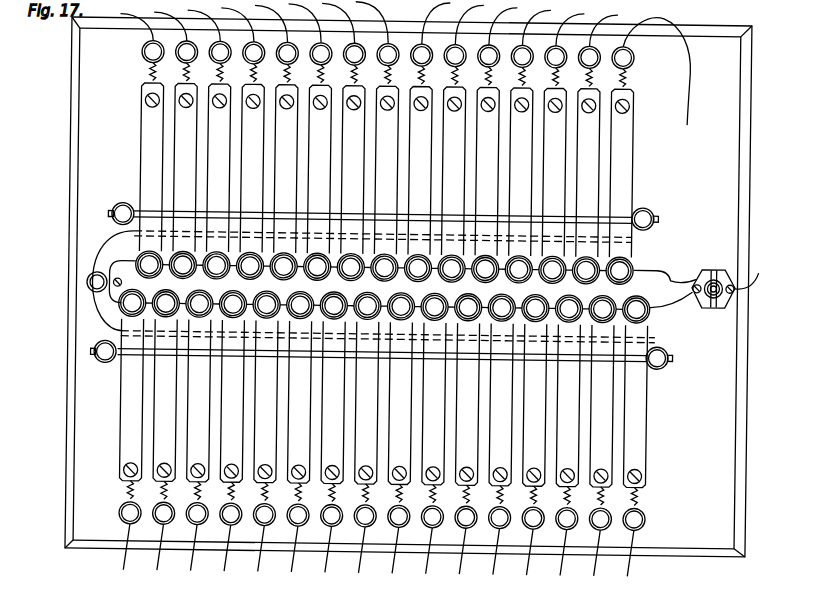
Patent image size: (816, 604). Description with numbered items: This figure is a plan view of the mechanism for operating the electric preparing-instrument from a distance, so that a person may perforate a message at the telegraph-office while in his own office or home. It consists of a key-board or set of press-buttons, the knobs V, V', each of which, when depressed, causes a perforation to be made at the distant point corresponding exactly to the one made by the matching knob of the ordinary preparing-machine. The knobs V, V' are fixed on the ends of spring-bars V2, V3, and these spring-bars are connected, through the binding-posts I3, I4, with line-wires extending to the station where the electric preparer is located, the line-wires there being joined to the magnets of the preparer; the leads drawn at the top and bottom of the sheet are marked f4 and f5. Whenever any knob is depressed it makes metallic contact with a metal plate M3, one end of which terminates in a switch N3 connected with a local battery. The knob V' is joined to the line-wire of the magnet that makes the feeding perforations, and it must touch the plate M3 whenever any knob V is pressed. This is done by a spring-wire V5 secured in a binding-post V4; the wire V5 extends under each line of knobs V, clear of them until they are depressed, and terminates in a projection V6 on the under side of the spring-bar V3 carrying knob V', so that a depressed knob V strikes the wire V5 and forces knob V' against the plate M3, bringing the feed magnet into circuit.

The binding-post I3 is at (378, 285).
The binding-post I4 is at (627, 67).
The spring-bar V2 is at (384, 285).
The spring-bar V3 is at (621, 173).
The knob V is at (388, 300).
The knob V' is at (390, 270).
The binding-post V4 is at (91, 271).
The spring-wire V5 is at (108, 281).
The projection V6 is at (388, 287).
The metal plate M3 is at (696, 286).
The switch N3 is at (713, 300).
The lead wire f4 is at (376, 296).
The lead wire f5 is at (661, 71).